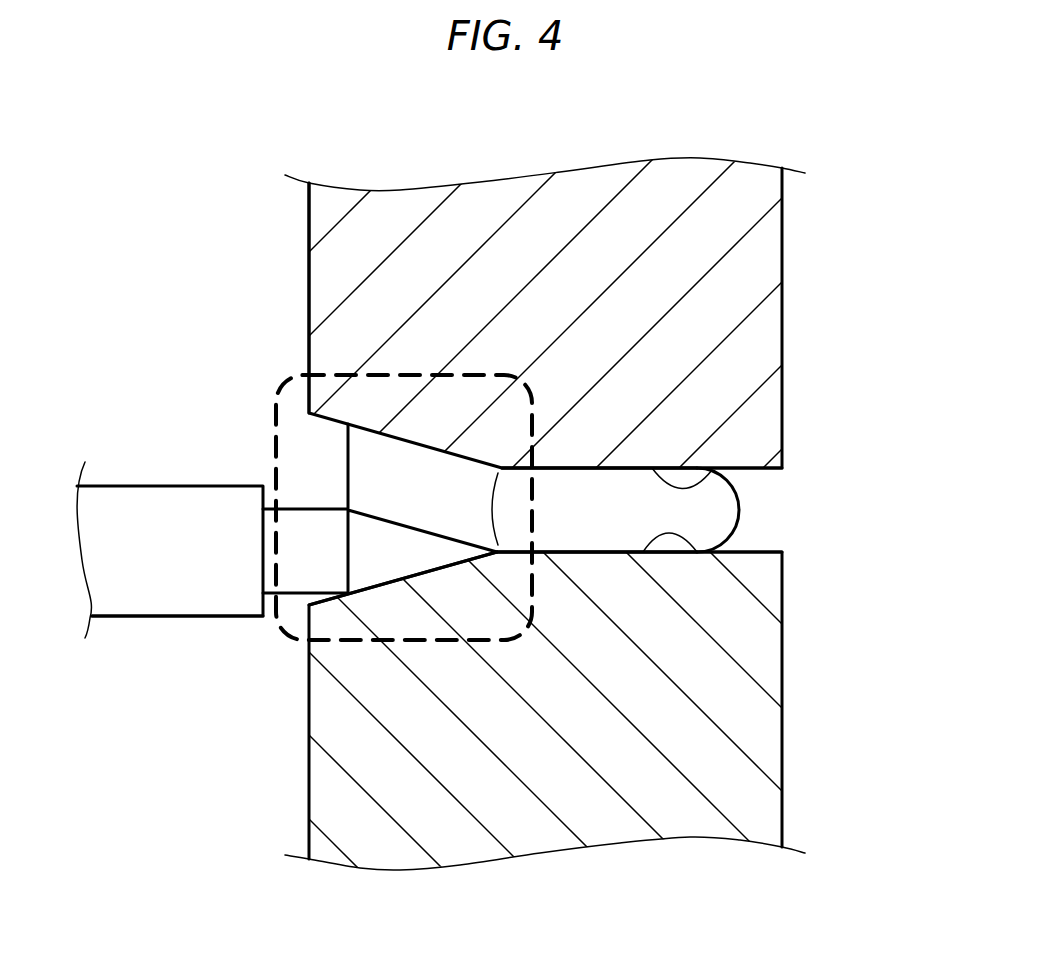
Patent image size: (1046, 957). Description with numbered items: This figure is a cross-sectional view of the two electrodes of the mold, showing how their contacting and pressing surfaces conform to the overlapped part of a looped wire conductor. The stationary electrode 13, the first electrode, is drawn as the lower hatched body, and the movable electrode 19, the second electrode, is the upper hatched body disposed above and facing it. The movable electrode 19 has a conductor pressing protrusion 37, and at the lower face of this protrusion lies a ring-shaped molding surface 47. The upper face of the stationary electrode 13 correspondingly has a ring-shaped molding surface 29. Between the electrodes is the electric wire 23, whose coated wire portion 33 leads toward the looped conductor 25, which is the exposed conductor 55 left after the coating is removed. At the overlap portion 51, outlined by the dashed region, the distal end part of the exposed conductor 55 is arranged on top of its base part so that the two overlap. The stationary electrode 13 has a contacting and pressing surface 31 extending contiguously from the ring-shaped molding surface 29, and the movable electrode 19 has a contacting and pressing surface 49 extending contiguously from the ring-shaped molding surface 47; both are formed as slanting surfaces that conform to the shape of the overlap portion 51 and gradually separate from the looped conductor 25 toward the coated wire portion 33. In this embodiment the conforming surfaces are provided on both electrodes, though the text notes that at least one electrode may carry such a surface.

The stationary electrode 13 is at (803, 766).
The movable electrode 19 is at (803, 267).
The electric wire 23 is at (160, 470).
The looped conductor 25 is at (760, 497).
The ring-shaped molding surface 29 is at (697, 552).
The contacting and pressing surface 31 is at (427, 567).
The coated wire portion 33 is at (162, 616).
The conductor pressing protrusion 37 is at (308, 272).
The ring-shaped molding surface 47 is at (710, 472).
The contacting and pressing surface 49 is at (417, 443).
The overlap portion 51 is at (275, 415).
The exposed conductor 55 is at (718, 518).